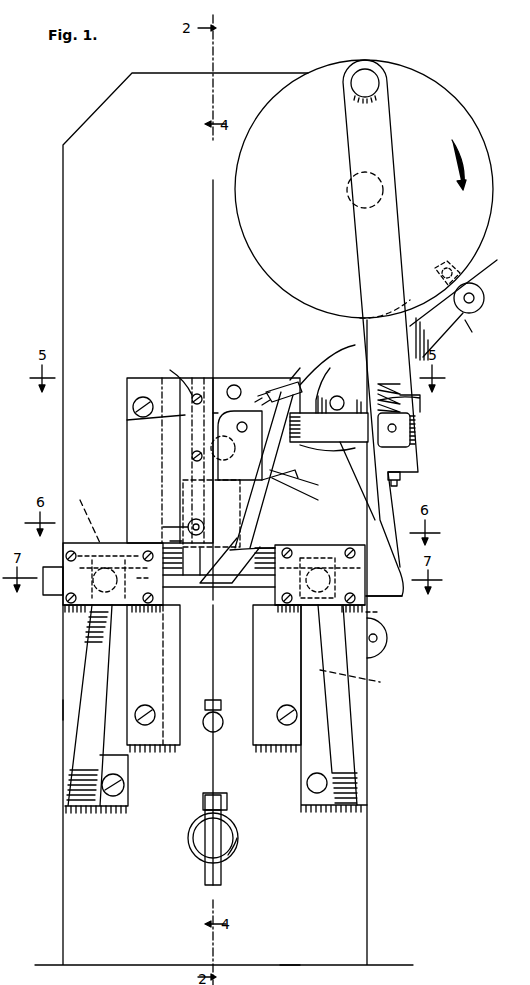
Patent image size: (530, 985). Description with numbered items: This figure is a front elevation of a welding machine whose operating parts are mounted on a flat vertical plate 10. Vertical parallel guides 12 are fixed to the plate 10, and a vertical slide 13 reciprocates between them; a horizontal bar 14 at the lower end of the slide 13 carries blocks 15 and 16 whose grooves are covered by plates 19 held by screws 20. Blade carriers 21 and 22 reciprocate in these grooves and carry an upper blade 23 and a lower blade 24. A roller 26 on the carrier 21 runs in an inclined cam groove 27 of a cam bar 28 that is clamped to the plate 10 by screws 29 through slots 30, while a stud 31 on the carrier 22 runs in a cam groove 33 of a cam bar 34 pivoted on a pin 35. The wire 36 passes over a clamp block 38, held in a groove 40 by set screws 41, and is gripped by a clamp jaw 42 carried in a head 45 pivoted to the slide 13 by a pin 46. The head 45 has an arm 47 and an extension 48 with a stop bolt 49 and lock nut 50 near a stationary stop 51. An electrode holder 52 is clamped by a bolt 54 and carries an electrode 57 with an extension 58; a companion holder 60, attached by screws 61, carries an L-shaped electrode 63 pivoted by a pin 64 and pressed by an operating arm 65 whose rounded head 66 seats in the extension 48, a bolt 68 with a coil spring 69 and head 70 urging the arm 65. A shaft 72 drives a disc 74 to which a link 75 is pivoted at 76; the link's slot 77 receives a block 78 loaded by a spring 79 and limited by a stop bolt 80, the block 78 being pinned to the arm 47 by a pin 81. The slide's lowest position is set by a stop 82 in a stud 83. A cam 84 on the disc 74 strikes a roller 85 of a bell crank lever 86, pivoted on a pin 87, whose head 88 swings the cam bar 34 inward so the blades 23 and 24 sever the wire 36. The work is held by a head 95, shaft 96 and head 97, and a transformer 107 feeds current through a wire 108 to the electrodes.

The vertical plate 10 is at (62, 258).
The vertical parallel guides 12 is at (127, 405).
The vertical slide 13 is at (226, 378).
The horizontal bar 14 is at (280, 540).
The block 15 is at (80, 543).
The block 16 is at (343, 545).
The plates 19 is at (75, 612).
The screws 20 is at (70, 608).
The blade carrier 21 is at (45, 590).
The blade carrier 22 is at (265, 590).
The upper horizontal blade 23 is at (153, 678).
The lower horizontal blade 24 is at (238, 612).
The roller 26 is at (86, 512).
The cam groove 27 is at (90, 660).
The cam bar 28 is at (68, 704).
The screws 29 is at (126, 786).
The elongated vertical slots 30 is at (118, 812).
The stud 31 is at (387, 610).
The cam groove 33 is at (345, 763).
The cam bar 34 is at (368, 728).
The pin 35 is at (316, 794).
The wire 36 is at (213, 262).
The clamp block 38 is at (127, 420).
The vertical groove 40 is at (197, 394).
The set screws 41 is at (172, 375).
The clamp jaw 42 is at (192, 455).
The head 45 is at (280, 392).
The pin 46 is at (237, 428).
The arm 47 is at (329, 427).
The extension 48 is at (264, 396).
The stop bolt 49 is at (258, 400).
The lock nut 50 is at (266, 403).
The stationary stop 51 is at (234, 385).
The electrode holder 52 is at (183, 495).
The bolt 54 is at (190, 521).
The electrode 57 is at (215, 590).
The horizontal extension 58 is at (192, 580).
The companion electrode holder 60 is at (250, 505).
The screws 61 is at (175, 540).
The L-shaped electrode 63 is at (240, 600).
The pin 64 is at (268, 478).
The operating arm 65 is at (331, 454).
The rounded head 66 is at (305, 380).
The bolt 68 is at (304, 482).
The coil spring 69 is at (305, 494).
The head 70 is at (320, 470).
The shaft 72 is at (347, 190).
The disc 74 is at (471, 130).
The link 75 is at (348, 146).
The pin 76 is at (352, 90).
The longitudinal slot 77 is at (389, 384).
The flanged block 78 is at (412, 441).
The coil spring 79 is at (422, 398).
The stop bolt 80 is at (402, 484).
The pin 81 is at (396, 428).
The stop 82 is at (212, 700).
The stud 83 is at (220, 730).
The cam 84 is at (463, 287).
The roller 85 is at (484, 305).
The bell crank lever 86 is at (470, 333).
The pin 87 is at (348, 392).
The head 88 is at (402, 596).
The vertical head 95 is at (239, 832).
The shaft 96 is at (224, 878).
The head 97 is at (228, 803).
The transformer 107 is at (293, 975).
The wire 108 is at (170, 527).